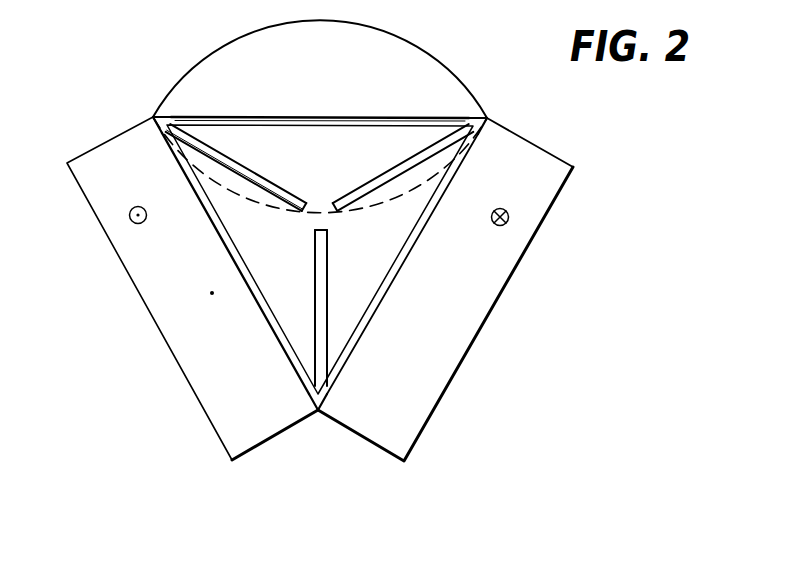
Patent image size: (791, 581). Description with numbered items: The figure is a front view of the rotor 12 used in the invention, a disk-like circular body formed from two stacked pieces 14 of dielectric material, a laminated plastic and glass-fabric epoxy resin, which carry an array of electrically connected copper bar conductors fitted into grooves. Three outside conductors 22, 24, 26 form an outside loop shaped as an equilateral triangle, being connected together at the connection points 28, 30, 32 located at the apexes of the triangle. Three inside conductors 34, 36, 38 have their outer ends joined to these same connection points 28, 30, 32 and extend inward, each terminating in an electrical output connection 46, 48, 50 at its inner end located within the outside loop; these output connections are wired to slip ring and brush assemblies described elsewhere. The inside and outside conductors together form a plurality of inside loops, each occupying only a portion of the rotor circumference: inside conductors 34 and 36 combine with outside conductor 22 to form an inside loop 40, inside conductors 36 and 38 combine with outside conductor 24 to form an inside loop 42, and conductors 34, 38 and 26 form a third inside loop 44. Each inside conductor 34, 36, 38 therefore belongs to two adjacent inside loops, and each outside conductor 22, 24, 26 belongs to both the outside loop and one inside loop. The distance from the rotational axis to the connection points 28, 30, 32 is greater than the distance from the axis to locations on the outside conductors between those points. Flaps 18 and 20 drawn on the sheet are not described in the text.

The rotor 12 is at (412, 37).
The stacked pieces of dielectric material 14 is at (449, 66).
The right side flap 18 is at (463, 286).
The left side flap 20 is at (203, 284).
The outside conductor 22 is at (379, 305).
The outside conductor 24 is at (267, 320).
The outside conductor 26 is at (245, 116).
The connection point 28 is at (487, 118).
The connection point 30 is at (318, 411).
The connection point 32 is at (153, 117).
The inside conductor 34 is at (408, 166).
The inside conductor 36 is at (315, 292).
The inside conductor 38 is at (241, 167).
The inside loop 40 is at (465, 169).
The inside loop 42 is at (288, 189).
The inside loop 44 is at (339, 116).
The electrical output connection 46 is at (341, 207).
The electrical output connection 48 is at (327, 238).
The electrical output connection 50 is at (301, 208).